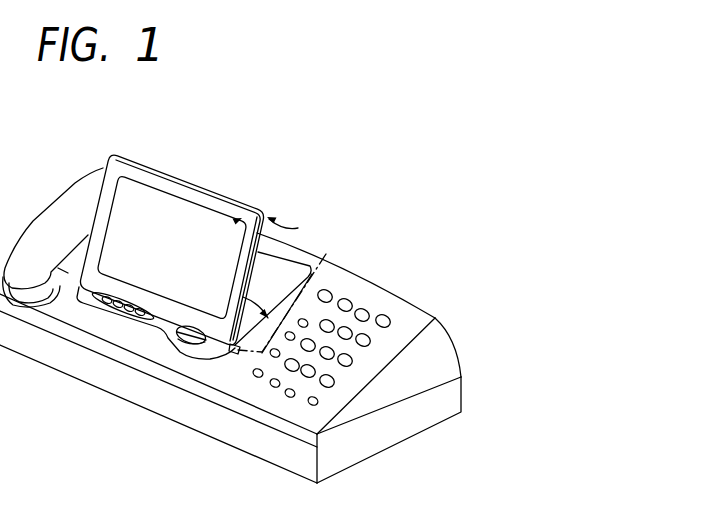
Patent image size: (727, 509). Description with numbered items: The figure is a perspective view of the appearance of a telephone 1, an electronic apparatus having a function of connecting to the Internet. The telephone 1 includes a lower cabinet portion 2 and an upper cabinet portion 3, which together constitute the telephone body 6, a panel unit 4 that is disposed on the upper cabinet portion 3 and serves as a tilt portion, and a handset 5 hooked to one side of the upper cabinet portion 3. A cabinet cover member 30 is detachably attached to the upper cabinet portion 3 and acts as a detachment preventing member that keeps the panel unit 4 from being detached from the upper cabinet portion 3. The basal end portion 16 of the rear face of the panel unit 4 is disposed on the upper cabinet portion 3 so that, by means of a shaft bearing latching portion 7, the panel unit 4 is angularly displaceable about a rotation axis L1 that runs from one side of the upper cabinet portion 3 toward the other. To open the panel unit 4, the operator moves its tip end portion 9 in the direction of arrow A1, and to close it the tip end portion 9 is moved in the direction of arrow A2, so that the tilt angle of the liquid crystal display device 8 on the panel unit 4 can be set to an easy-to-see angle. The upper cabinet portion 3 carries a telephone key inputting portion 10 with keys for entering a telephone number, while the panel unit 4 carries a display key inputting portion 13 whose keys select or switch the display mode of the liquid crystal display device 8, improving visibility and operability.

The telephone 1 is at (406, 92).
The lower cabinet portion 2 is at (447, 397).
The upper cabinet portion 3 is at (438, 352).
The panel unit 4 is at (263, 255).
The handset 5 is at (58, 212).
The telephone body 6 is at (501, 329).
The shaft bearing latching portion 7 is at (232, 350).
The liquid crystal display device 8 is at (177, 207).
The tip end portion 9 is at (110, 139).
The telephone key inputting portion 10 is at (335, 318).
The display key inputting portion 13 is at (110, 306).
The basal end portion 16 is at (222, 352).
The cabinet cover member 30 is at (283, 273).
The arrow A1 is at (286, 220).
The arrow A2 is at (240, 219).
The rotation axis L1 is at (288, 289).